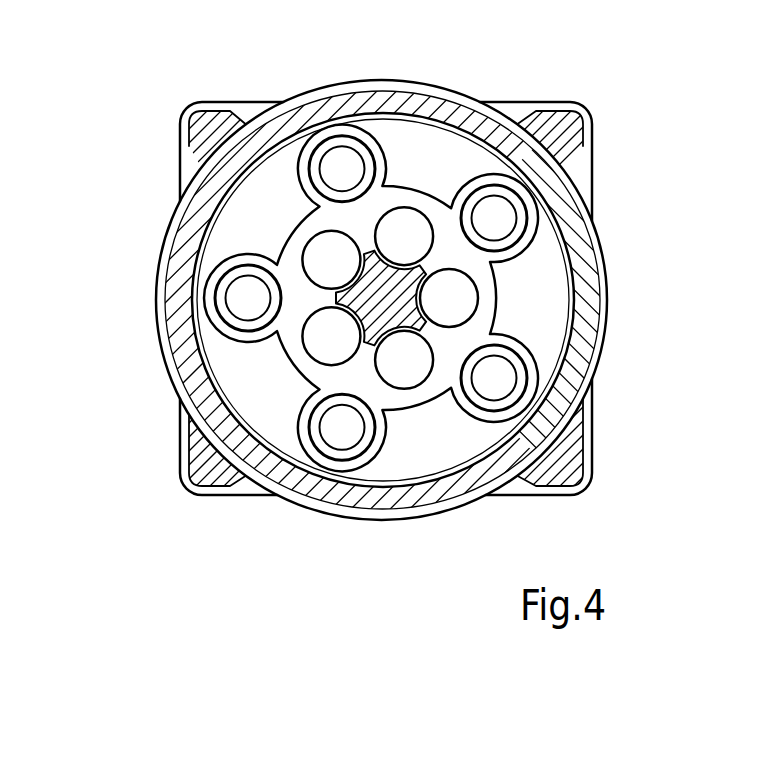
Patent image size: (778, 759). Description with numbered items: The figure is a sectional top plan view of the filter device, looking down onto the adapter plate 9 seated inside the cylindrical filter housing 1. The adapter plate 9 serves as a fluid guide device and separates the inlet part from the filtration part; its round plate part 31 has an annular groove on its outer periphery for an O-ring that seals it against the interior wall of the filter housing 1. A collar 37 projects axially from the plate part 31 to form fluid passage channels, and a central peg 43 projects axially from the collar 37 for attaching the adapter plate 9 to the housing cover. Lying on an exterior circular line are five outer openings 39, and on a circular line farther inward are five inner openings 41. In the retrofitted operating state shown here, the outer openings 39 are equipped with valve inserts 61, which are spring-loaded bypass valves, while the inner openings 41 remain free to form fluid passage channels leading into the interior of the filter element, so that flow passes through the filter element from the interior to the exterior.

The filter housing 1 is at (583, 197).
The adapter plate 9 is at (207, 178).
The plate part 31 is at (521, 323).
The collar 37 is at (460, 262).
The outer openings 39 is at (479, 192).
The inner openings 41 is at (406, 203).
The central peg 43 is at (326, 328).
The valve inserts 61 is at (335, 161).